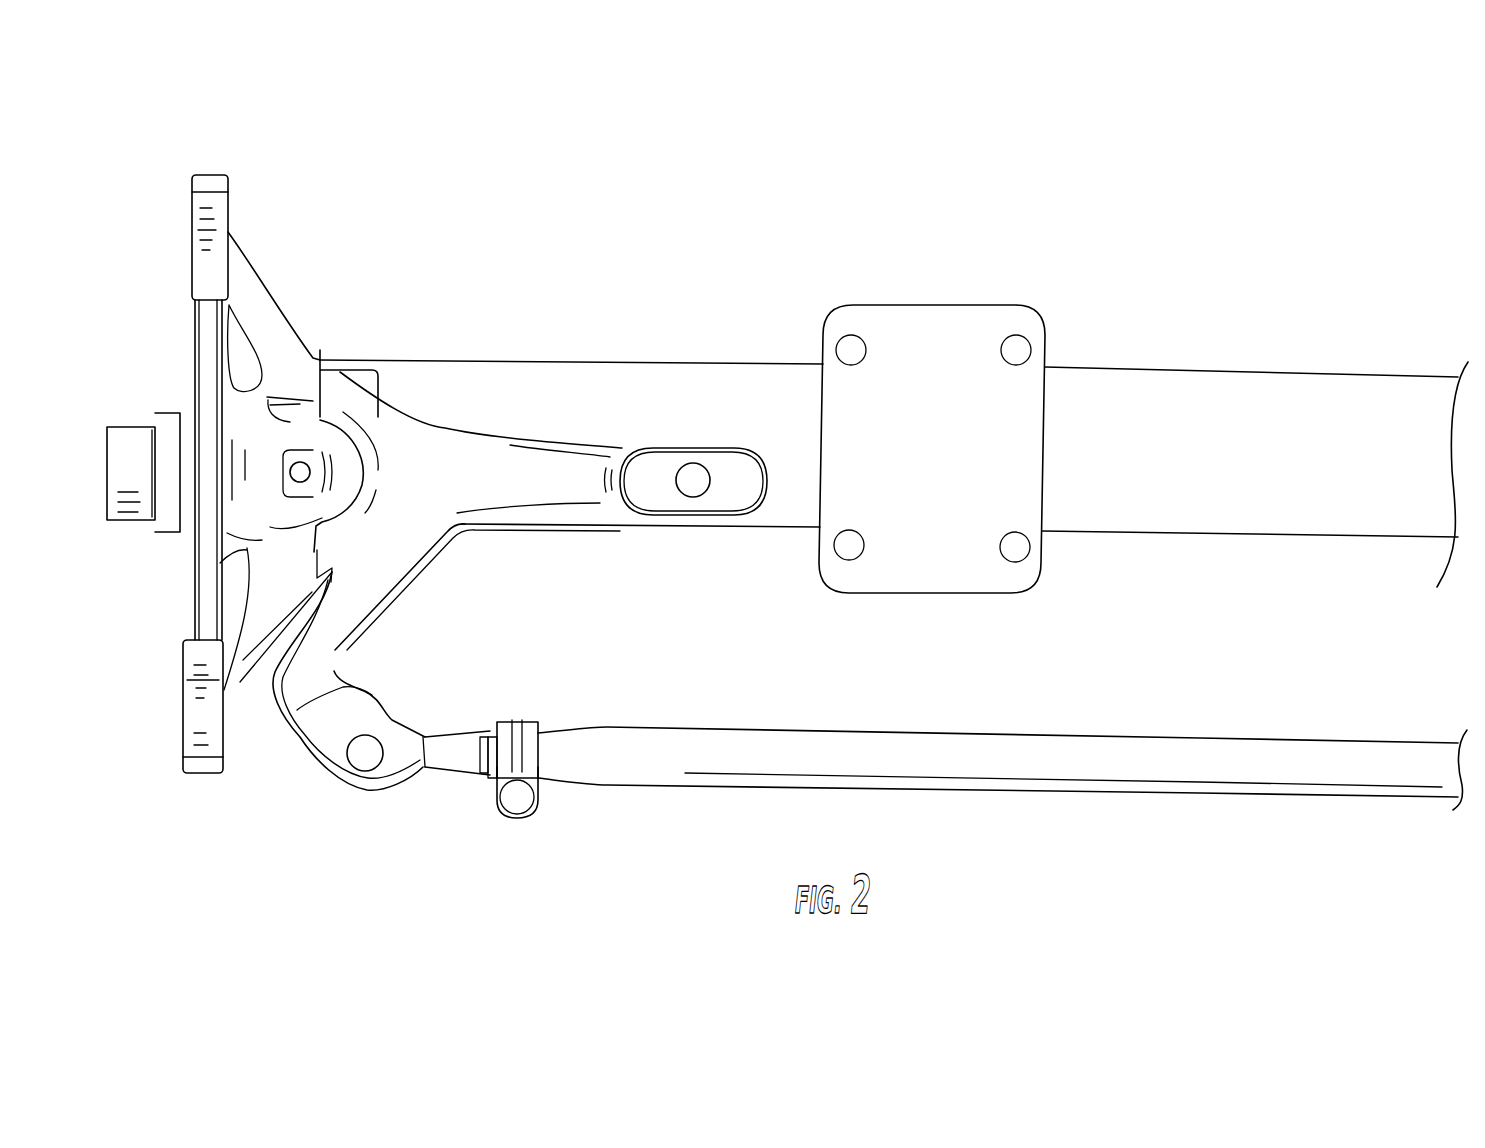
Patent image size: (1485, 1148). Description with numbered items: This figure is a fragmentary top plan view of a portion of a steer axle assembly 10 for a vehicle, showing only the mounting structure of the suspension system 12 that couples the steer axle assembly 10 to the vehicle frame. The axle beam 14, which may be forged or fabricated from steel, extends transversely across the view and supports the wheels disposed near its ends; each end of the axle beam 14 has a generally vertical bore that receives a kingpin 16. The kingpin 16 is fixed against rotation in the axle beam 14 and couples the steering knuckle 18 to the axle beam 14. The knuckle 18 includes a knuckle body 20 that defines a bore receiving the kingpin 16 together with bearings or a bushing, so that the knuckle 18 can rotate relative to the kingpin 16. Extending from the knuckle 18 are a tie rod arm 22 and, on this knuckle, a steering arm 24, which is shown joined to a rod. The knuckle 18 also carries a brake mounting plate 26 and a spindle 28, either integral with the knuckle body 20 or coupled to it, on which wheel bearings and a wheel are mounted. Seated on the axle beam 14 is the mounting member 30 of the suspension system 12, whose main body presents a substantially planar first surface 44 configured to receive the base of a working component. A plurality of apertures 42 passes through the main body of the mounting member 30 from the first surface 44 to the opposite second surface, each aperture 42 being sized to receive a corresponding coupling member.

The steer axle assembly 10 is at (355, 146).
The suspension system 12 is at (851, 290).
The axle beam 14 is at (567, 361).
The kingpin 16 is at (307, 470).
The steering knuckle 18 is at (268, 315).
The knuckle body 20 is at (283, 342).
The tie rod arm 22 is at (365, 585).
The steering arm 24 is at (463, 476).
The brake mounting plate 26 is at (192, 217).
The spindle 28 is at (137, 437).
The mounting member 30 is at (946, 302).
The apertures 42 is at (1020, 347).
The first surface 44 is at (942, 466).